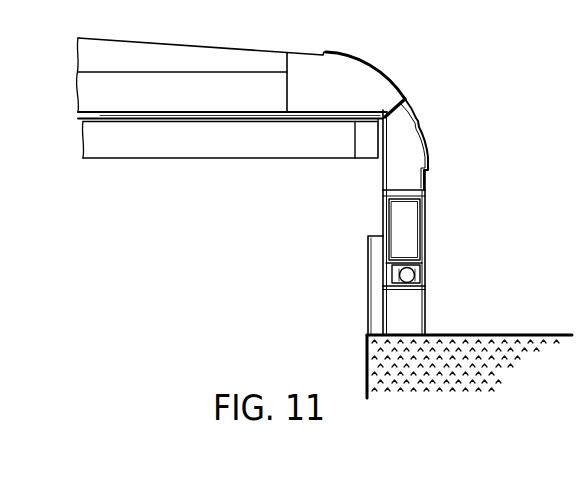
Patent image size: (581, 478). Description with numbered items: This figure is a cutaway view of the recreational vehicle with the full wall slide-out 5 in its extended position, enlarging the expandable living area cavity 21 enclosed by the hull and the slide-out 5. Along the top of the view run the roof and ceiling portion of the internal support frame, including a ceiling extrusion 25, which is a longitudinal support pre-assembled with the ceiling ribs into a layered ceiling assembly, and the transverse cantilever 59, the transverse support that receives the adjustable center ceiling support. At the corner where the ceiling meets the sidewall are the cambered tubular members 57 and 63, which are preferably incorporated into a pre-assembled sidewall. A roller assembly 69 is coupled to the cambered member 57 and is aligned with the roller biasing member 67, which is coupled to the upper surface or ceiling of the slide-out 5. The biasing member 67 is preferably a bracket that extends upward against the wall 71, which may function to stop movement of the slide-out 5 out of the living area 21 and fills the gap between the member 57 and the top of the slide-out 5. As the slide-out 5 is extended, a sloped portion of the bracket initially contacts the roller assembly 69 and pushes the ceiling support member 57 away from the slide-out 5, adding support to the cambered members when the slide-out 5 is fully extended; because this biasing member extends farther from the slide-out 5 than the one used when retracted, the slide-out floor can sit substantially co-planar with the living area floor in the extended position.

The ceiling extrusion 25 is at (356, 62).
The transverse cantilever 59 is at (200, 160).
The cambered tubular member 63 is at (428, 148).
The cambered tubular member 57 is at (427, 222).
The roller assembly 69 is at (422, 273).
The roller biasing member 67 is at (425, 290).
The wall 71 is at (367, 275).
The full wall slide-out 5 is at (508, 327).
The expandable living area cavity 21 is at (212, 286).